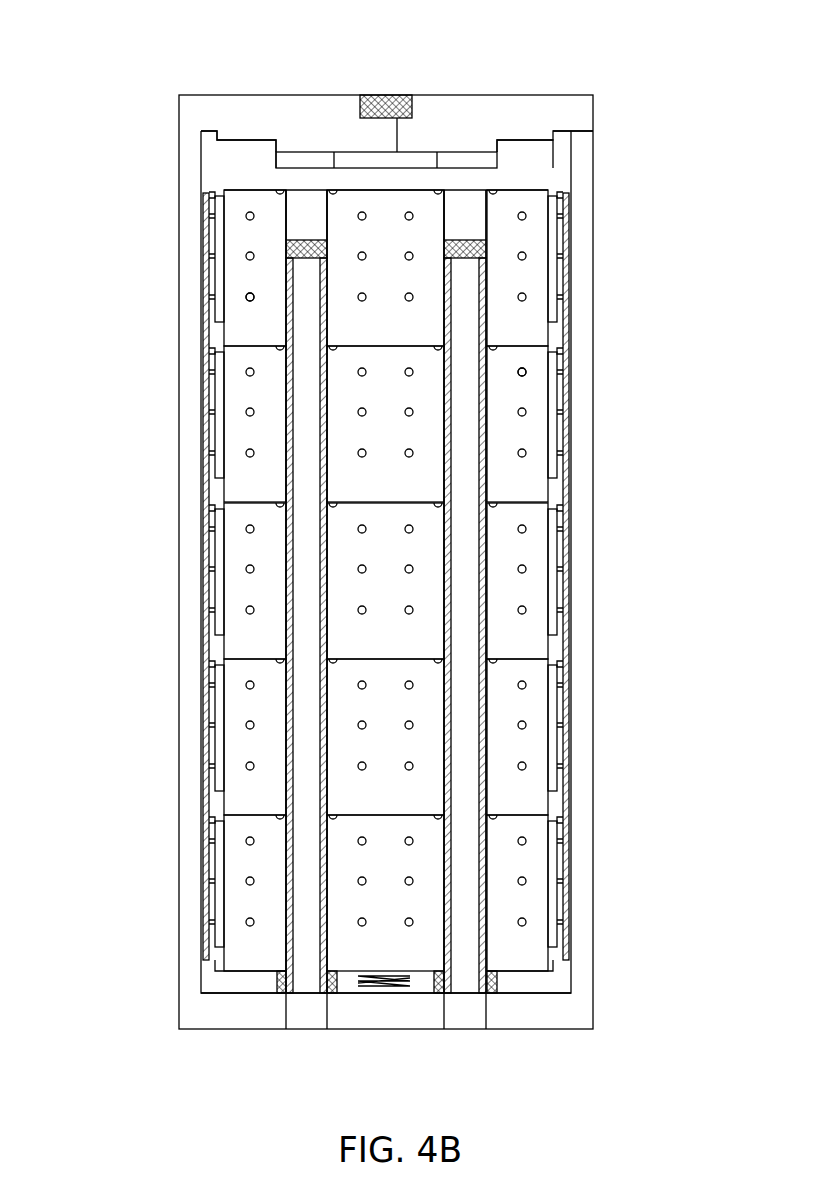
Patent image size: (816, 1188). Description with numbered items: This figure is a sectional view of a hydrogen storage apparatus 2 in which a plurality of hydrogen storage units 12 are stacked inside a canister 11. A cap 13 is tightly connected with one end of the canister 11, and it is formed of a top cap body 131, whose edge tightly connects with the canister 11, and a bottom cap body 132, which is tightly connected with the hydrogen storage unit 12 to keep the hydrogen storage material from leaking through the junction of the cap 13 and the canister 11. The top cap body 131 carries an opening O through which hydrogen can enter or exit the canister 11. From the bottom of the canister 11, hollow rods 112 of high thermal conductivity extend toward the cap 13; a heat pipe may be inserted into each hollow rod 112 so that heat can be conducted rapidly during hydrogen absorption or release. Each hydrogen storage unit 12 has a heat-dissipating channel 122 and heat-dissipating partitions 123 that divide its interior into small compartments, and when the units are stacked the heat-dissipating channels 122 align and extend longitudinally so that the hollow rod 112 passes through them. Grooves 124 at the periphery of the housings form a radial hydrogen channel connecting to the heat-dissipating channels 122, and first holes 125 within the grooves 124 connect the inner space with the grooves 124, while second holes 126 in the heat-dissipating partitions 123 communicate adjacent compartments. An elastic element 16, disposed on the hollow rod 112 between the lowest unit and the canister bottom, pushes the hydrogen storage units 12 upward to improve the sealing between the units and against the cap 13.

The hydrogen storage apparatus 2 is at (185, 50).
The opening O is at (397, 92).
The canister 11 is at (588, 258).
The hollow rod 112 is at (305, 1020).
The hydrogen storage unit 12 is at (345, 535).
The heat-dissipating channel 122 is at (305, 195).
The heat-dissipating partitions 123 is at (237, 197).
The grooves 124 is at (196, 233).
The first holes 125 is at (202, 212).
The second holes 126 is at (246, 294).
The cap 13 is at (470, 152).
The top cap body 131 is at (588, 113).
The bottom cap body 132 is at (575, 190).
The elastic element 16 is at (490, 985).